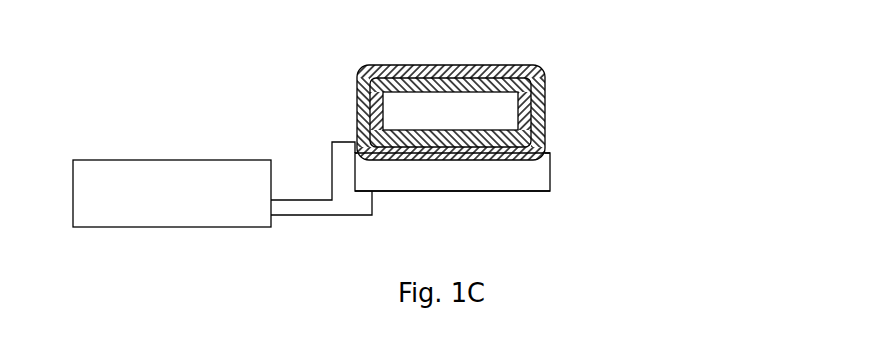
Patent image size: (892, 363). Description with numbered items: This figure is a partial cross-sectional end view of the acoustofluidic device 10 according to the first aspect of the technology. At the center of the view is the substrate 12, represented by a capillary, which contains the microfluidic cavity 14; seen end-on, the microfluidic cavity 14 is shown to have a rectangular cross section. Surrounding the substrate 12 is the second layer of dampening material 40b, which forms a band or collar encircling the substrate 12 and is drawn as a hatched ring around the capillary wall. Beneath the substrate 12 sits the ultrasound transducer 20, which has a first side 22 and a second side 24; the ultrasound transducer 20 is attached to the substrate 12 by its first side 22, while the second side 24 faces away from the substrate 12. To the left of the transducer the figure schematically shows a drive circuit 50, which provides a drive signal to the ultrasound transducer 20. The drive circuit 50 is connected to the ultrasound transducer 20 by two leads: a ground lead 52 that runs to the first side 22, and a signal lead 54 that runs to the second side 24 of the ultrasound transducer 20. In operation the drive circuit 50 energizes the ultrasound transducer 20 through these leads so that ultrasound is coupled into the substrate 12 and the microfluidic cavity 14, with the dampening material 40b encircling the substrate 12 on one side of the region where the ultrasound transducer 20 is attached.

The acoustofluidic device 10 is at (313, 57).
The substrate 12 is at (371, 68).
The microfluidic cavity 14 is at (463, 107).
The second layer of dampening material 40b is at (514, 65).
The ultrasound transducer 20 is at (552, 166).
The first side 22 is at (546, 148).
The second side 24 is at (522, 193).
The drive circuit 50 is at (172, 160).
The ground lead 52 is at (307, 200).
The signal lead 54 is at (374, 197).